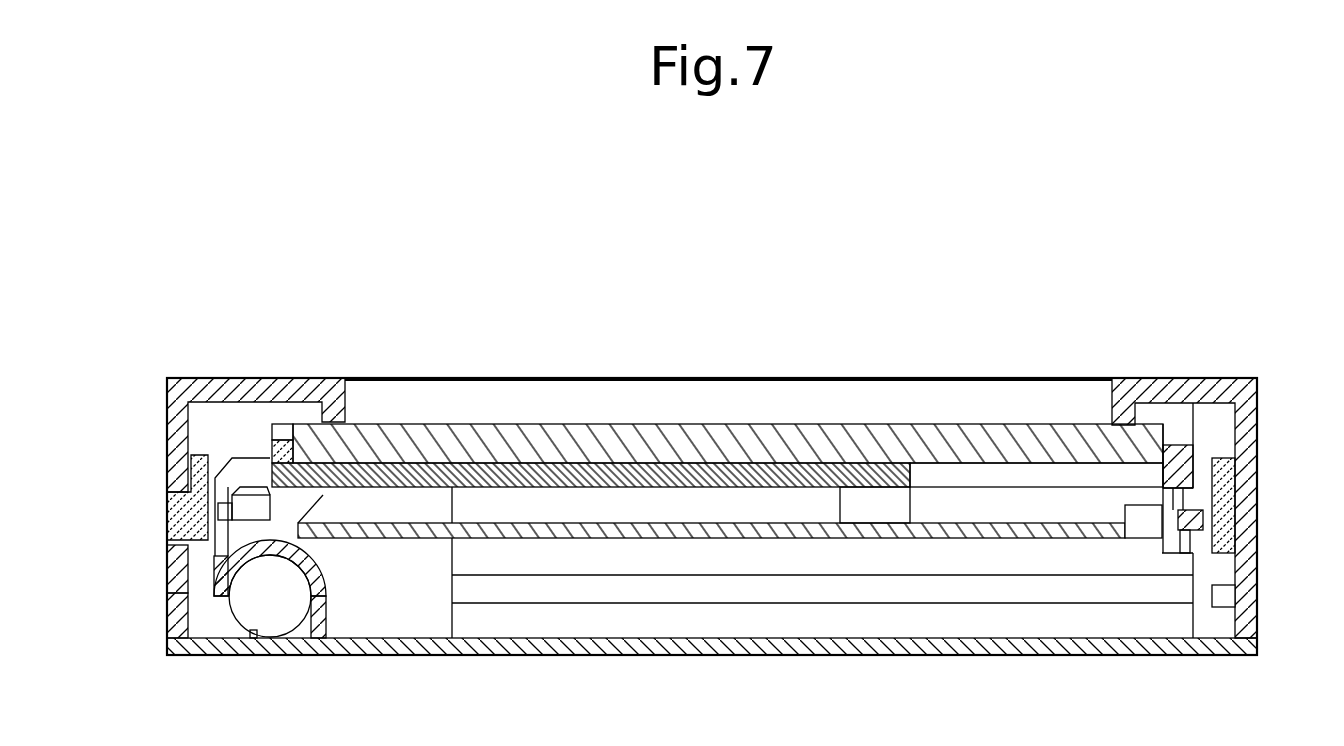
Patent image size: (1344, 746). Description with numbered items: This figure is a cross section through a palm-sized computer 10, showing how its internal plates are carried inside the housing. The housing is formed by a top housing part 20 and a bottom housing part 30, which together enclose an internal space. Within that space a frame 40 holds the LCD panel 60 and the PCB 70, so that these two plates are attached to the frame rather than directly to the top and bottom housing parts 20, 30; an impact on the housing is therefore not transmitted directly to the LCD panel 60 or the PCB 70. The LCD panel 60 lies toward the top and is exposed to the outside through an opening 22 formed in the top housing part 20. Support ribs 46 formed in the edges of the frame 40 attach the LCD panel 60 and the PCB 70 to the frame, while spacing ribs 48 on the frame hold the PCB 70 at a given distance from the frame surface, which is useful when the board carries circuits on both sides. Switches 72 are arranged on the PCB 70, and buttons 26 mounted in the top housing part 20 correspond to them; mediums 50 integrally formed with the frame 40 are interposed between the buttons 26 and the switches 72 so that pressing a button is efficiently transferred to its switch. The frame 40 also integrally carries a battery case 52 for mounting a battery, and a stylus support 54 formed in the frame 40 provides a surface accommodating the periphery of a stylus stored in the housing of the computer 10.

The palm-sized computer 10 is at (712, 418).
The top housing part 20 is at (270, 380).
The opening 22 is at (634, 397).
The buttons 26 is at (1208, 524).
The bottom housing part 30 is at (632, 648).
The frame 40 is at (772, 470).
The support ribs 46 is at (1195, 442).
The spacing ribs 48 is at (303, 498).
The mediums 50 is at (1238, 547).
The battery case 52 is at (818, 555).
The stylus support 54 is at (227, 563).
The LCD panel 60 is at (488, 437).
The PCB 70 is at (402, 530).
The switches 72 is at (1138, 517).